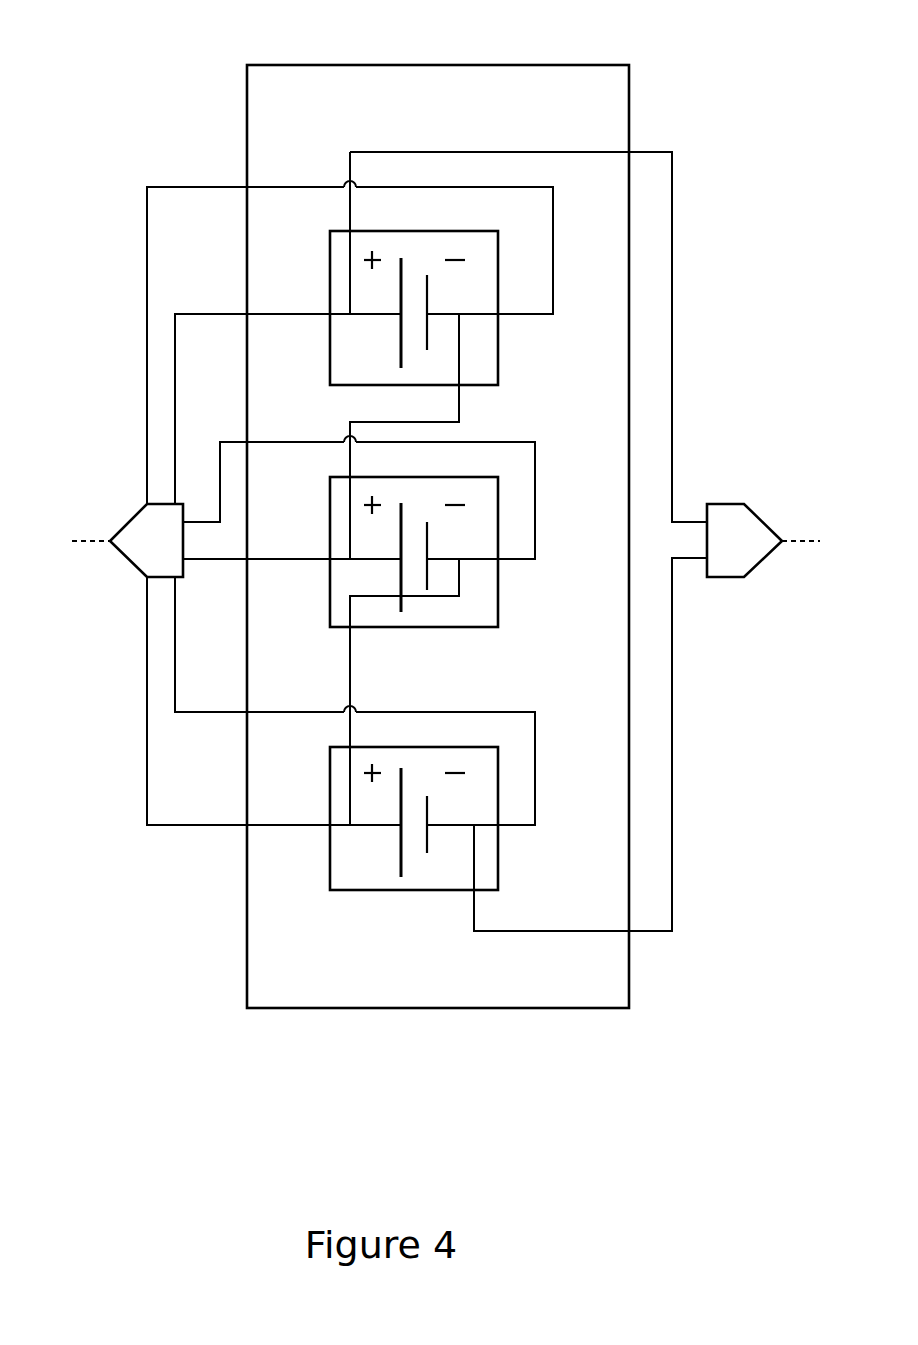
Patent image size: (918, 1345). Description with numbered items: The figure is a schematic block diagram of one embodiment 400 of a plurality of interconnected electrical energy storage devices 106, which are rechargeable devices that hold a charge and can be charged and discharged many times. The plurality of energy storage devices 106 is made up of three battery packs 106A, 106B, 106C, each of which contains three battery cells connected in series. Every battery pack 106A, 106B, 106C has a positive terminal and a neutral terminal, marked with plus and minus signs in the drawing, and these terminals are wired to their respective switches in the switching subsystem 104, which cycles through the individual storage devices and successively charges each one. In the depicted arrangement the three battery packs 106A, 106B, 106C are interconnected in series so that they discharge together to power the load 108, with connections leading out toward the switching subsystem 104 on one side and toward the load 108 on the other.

The embodiment of a plurality of interconnected EESDs 400 is at (132, 67).
The plurality of interconnected electrical energy storage devices 106 is at (610, 112).
The first battery pack 106A is at (486, 309).
The second battery pack 106B is at (486, 554).
The third battery pack 106C is at (486, 819).
The switching subsystem 104 is at (127, 540).
The load 108 is at (763, 540).